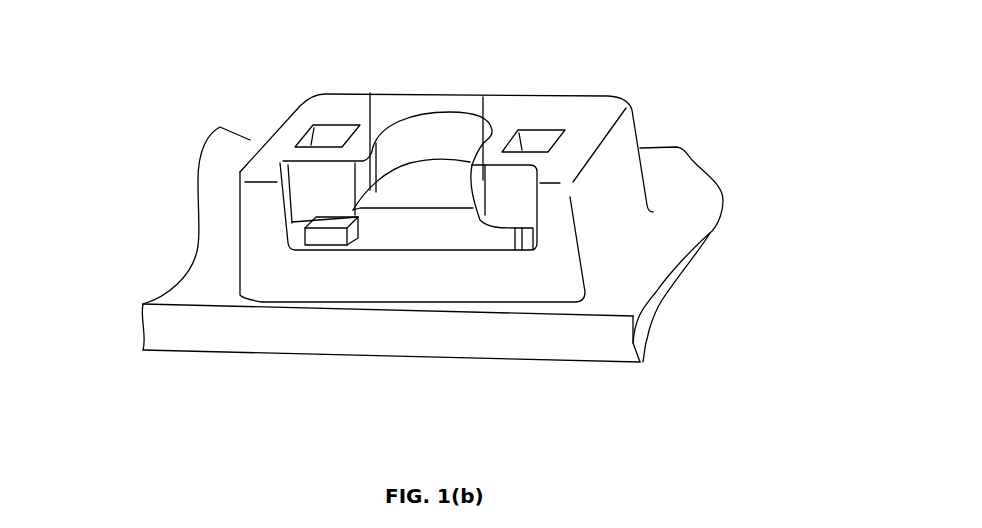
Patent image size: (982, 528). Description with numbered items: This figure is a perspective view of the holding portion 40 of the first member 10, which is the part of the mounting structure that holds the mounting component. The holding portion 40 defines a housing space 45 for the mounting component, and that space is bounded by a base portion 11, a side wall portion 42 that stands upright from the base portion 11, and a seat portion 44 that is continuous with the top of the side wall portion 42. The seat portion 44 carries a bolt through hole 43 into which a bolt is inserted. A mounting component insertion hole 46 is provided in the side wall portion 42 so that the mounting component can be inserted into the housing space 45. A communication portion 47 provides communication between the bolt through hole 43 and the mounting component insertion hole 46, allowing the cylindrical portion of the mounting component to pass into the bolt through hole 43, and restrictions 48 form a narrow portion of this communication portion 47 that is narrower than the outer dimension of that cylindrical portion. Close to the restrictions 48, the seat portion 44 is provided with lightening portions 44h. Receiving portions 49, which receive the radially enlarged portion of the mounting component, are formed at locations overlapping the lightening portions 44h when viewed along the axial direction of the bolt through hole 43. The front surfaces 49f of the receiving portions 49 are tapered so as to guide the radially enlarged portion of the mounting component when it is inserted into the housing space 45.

The first member 10 is at (680, 93).
The base portion 11 is at (687, 195).
The holding portion 40 is at (618, 85).
The side wall portion 42 is at (297, 228).
The bolt through hole 43 is at (438, 133).
The seat portion 44 is at (400, 107).
The lightening portions 44h is at (327, 133).
The housing space 45 is at (397, 232).
The mounting component insertion hole 46 is at (467, 243).
The communication portion 47 is at (430, 192).
The restrictions 48 is at (370, 93).
The receiving portions 49 is at (332, 228).
The front surfaces 49f is at (310, 228).